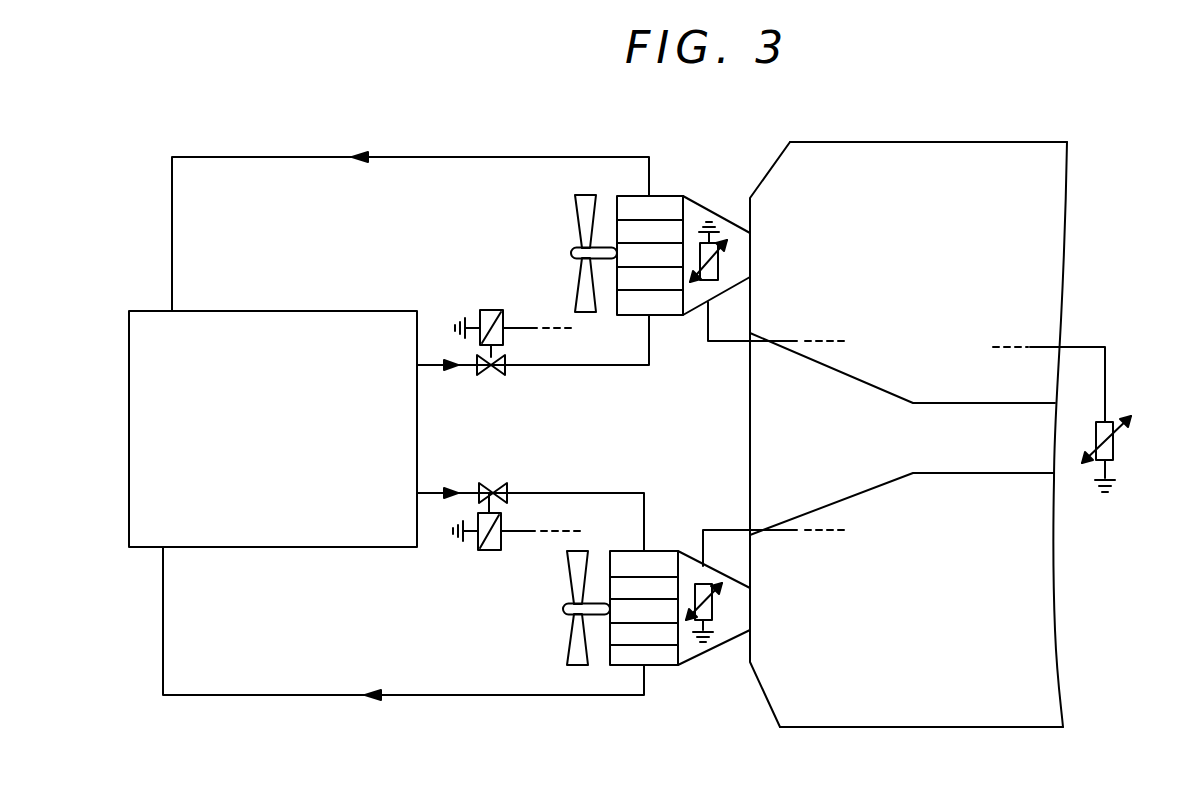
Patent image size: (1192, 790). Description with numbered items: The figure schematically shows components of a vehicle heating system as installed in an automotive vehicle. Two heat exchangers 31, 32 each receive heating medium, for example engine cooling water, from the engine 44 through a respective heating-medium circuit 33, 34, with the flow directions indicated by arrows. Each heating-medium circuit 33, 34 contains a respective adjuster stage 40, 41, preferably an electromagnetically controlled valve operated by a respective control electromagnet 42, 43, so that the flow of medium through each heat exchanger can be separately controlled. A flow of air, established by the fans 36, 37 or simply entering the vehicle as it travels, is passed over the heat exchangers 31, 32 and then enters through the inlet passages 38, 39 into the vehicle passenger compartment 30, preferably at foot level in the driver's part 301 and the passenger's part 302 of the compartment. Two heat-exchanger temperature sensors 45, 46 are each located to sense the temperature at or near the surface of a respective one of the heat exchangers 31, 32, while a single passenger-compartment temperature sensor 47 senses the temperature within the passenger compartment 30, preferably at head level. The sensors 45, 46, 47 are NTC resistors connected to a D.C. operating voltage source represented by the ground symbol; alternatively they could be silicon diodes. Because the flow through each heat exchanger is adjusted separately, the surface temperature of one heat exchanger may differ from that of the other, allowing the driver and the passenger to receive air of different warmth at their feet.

The vehicle passenger compartment 30 is at (1053, 228).
The driver's part of the passenger compartment 301 is at (788, 172).
The passenger's part of the passenger compartment 302 is at (798, 702).
The heat exchanger 31 is at (664, 203).
The heat exchanger 32 is at (660, 668).
The heating-medium circuit 33 is at (437, 158).
The heating-medium circuit 34 is at (313, 694).
The fan 36 is at (583, 208).
The fan 37 is at (567, 648).
The inlet passage 38 is at (743, 260).
The inlet passage 39 is at (743, 608).
The adjuster stage 40 is at (497, 357).
The adjuster stage 41 is at (497, 506).
The control electromagnet 42 is at (515, 288).
The control electromagnet 43 is at (491, 551).
The engine 44 is at (260, 539).
The heat-exchanger temperature sensor 45 is at (725, 268).
The heat-exchanger temperature sensor 46 is at (737, 548).
The passenger-compartment temperature sensor 47 is at (1108, 418).